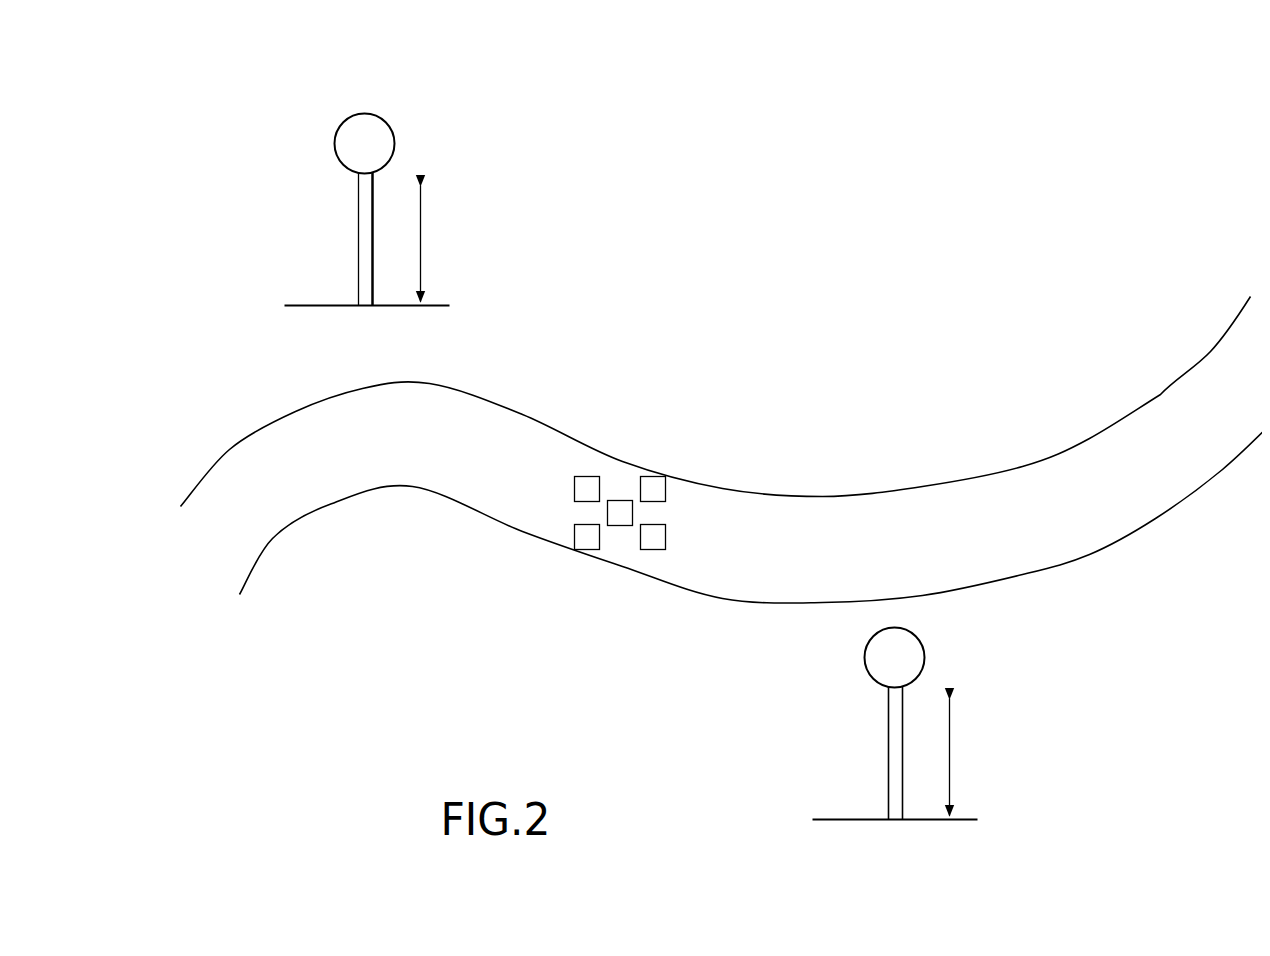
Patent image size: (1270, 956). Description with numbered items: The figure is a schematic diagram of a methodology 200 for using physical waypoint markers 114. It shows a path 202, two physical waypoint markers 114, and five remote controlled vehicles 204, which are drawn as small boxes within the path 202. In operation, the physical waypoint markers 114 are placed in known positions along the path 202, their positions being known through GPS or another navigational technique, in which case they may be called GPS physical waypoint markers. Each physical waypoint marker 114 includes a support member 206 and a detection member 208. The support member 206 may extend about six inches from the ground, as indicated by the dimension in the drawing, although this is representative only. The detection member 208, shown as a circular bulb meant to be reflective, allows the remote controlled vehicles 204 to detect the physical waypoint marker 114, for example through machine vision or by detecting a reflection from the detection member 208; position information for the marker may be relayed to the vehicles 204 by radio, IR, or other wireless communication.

The methodology 200 is at (832, 176).
The path 202 is at (222, 466).
The remote controlled vehicles 204 is at (578, 468).
The physical waypoint markers 114 is at (629, 450).
The support member 206 is at (350, 242).
The detection member 208 is at (380, 116).